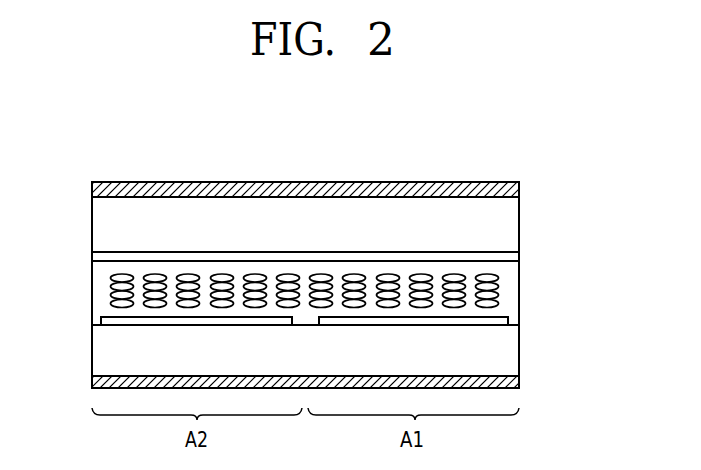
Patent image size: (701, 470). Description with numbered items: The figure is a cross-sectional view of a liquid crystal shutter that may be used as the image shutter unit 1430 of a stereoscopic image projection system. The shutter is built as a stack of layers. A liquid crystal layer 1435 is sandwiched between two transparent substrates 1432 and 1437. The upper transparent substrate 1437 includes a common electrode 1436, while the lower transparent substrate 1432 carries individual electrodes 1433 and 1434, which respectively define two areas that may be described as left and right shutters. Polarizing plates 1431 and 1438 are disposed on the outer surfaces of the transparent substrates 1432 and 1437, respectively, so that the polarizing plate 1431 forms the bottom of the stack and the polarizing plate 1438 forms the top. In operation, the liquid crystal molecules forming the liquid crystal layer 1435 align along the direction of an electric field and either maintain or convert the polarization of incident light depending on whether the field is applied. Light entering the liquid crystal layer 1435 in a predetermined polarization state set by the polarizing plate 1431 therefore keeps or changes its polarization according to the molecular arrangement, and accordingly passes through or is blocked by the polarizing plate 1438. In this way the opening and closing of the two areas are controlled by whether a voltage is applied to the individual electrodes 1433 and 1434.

The image shutter unit 1430 is at (523, 160).
The polarizing plate 1431 is at (520, 385).
The transparent substrate 1432 is at (514, 357).
The individual electrode 1433 is at (509, 322).
The individual electrode 1434 is at (103, 320).
The liquid crystal layer 1435 is at (520, 286).
The common electrode 1436 is at (520, 259).
The transparent substrate 1437 is at (514, 224).
The polarizing plate 1438 is at (520, 193).